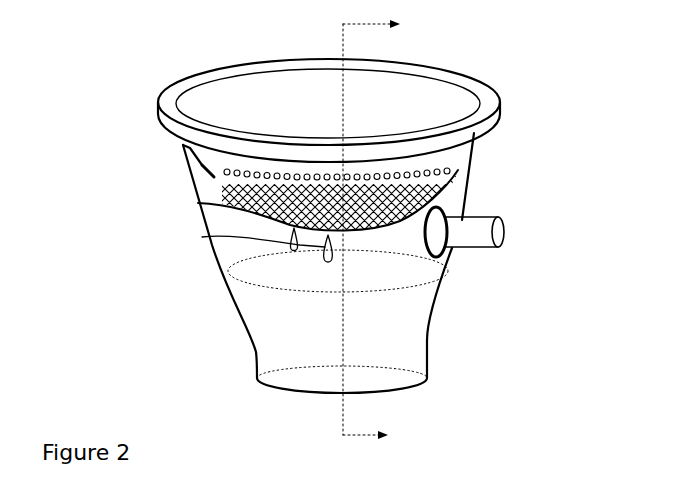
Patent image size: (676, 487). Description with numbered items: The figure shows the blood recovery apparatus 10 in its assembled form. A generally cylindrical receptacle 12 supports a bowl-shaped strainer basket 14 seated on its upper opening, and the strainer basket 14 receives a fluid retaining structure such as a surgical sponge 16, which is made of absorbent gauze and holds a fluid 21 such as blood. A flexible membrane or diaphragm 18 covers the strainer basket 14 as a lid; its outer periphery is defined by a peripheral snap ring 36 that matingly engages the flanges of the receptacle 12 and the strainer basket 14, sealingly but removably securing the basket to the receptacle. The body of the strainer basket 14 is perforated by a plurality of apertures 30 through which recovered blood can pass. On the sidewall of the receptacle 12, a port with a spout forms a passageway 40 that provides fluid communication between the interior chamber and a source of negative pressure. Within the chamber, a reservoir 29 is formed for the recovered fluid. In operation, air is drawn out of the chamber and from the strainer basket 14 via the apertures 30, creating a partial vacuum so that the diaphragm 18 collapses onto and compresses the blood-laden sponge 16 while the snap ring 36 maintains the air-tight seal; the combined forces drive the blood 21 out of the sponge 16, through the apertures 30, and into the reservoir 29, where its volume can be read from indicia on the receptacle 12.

The blood recovery apparatus 10 is at (308, 467).
The receptacle 12 is at (255, 348).
The strainer basket 14 is at (189, 146).
The surgical sponge 16 is at (200, 205).
The diaphragm 18 is at (173, 85).
The fluid 21 is at (202, 237).
The reservoir 29 is at (355, 333).
The apertures 30 is at (455, 169).
The peripheral snap ring 36 is at (158, 120).
The passageway 40 is at (472, 231).